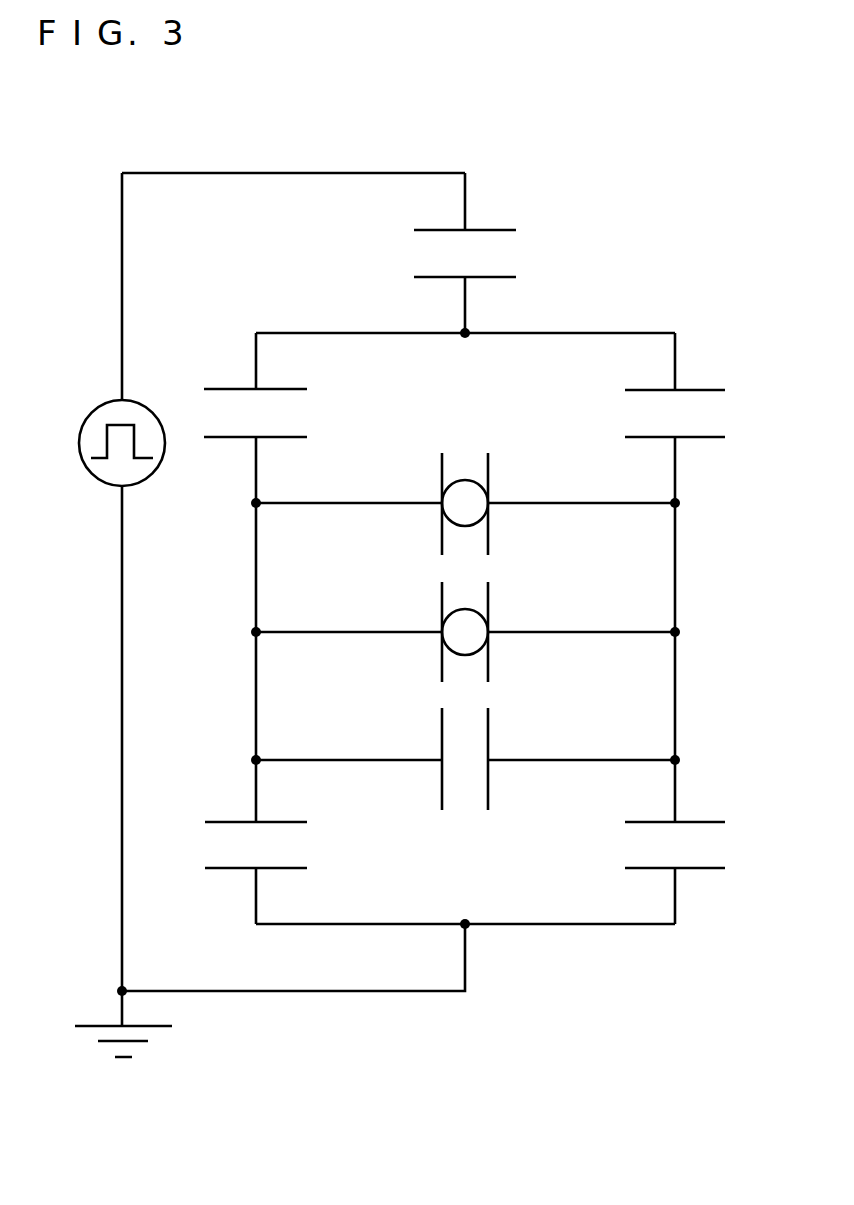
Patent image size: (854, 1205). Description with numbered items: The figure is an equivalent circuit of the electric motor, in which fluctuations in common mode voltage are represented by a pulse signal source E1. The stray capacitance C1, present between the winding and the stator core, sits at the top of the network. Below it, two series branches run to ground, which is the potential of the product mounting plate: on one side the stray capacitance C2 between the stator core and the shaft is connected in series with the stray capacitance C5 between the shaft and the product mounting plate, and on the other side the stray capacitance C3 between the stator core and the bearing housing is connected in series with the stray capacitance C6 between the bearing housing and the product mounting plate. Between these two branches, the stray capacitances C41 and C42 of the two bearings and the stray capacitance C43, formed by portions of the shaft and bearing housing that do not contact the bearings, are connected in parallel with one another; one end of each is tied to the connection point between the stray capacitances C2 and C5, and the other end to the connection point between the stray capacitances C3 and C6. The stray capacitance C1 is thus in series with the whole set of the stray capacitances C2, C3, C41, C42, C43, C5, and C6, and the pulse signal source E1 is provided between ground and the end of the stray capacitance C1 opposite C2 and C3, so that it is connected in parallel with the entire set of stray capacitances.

The pulse signal source E1 is at (122, 424).
The stray capacitance C1 is at (465, 253).
The stray capacitance C2 is at (255, 385).
The stray capacitance C3 is at (675, 385).
The stray capacitance C41 is at (490, 496).
The stray capacitance C42 is at (490, 628).
The stray capacitance C43 is at (490, 759).
The stray capacitance C5 is at (256, 853).
The stray capacitance C6 is at (675, 853).